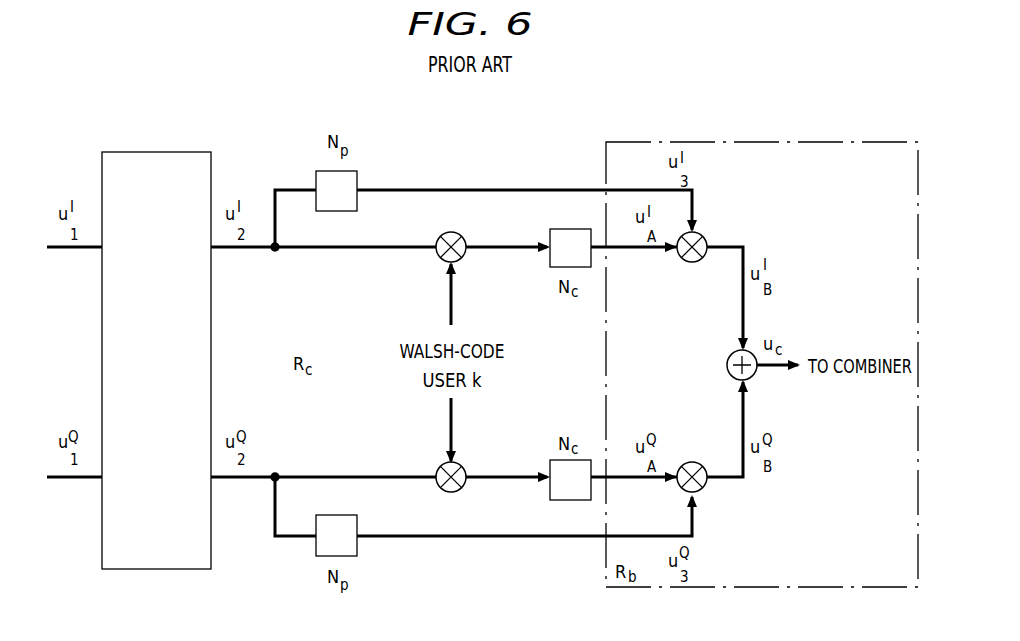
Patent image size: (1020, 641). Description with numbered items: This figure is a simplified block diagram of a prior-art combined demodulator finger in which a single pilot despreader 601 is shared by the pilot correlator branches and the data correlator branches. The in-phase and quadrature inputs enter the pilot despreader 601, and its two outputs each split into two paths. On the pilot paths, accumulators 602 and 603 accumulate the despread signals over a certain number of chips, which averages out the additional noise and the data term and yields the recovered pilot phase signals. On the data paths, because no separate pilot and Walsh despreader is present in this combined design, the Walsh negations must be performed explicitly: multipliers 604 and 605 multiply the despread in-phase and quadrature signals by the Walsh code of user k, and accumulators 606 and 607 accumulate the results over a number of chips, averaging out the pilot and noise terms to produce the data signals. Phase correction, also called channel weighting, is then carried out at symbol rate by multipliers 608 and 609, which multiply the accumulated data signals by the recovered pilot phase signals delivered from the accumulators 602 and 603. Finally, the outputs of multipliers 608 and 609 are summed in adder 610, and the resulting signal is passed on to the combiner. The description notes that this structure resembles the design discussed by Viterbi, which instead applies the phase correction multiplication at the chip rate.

The pilot despreader 601 is at (163, 570).
The accumulator 602 is at (358, 178).
The accumulator 603 is at (357, 544).
The multiplier 604 is at (462, 235).
The multiplier 605 is at (462, 490).
The accumulator 606 is at (548, 257).
The accumulator 607 is at (548, 467).
The multiplier 608 is at (700, 237).
The multiplier 609 is at (703, 491).
The adder 610 is at (756, 378).